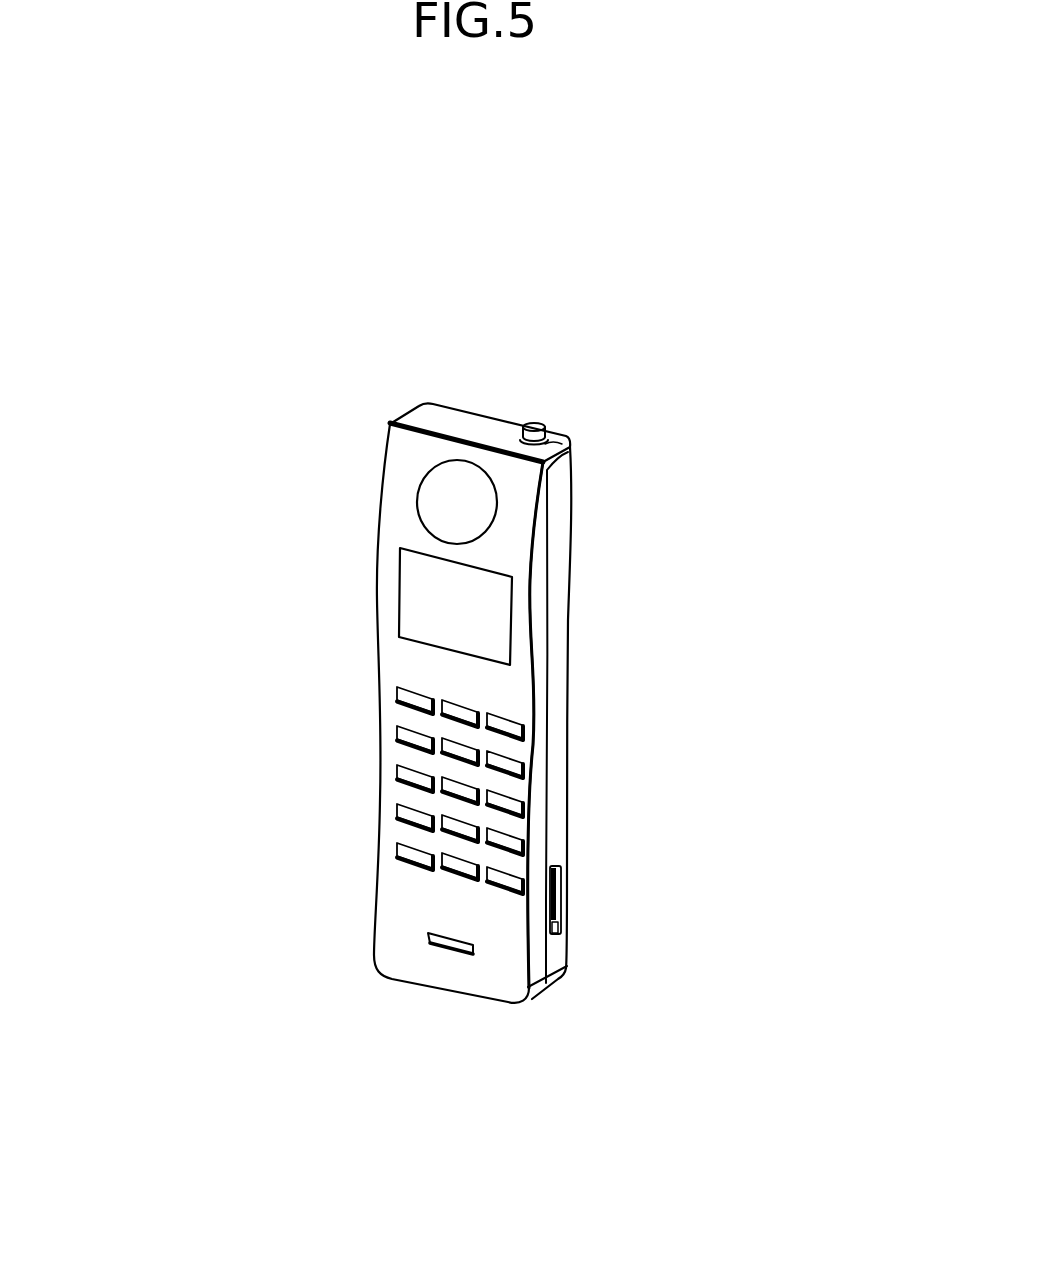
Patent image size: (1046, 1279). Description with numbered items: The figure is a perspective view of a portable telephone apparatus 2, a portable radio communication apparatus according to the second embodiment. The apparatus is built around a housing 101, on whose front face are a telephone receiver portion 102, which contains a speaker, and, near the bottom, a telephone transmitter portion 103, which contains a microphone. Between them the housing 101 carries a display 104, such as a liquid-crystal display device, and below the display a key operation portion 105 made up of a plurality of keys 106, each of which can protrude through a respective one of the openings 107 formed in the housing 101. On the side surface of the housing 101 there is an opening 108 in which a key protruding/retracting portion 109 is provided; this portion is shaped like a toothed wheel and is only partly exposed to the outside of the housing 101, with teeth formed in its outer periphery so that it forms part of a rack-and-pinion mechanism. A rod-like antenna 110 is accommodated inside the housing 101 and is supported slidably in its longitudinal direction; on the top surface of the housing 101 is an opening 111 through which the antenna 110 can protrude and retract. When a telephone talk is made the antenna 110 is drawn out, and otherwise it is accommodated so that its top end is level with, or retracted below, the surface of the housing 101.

The portable telephone apparatus 2 is at (446, 306).
The housing 101 is at (394, 419).
The telephone receiver portion 102 is at (438, 503).
The telephone transmitter portion 103 is at (450, 950).
The display 104 is at (485, 625).
The key operation portion 105 is at (336, 719).
The keys 106 is at (397, 856).
The openings 107 is at (514, 770).
The opening 108 is at (558, 928).
The key protruding/retracting portion 109 is at (558, 900).
The antenna 110 is at (546, 427).
The opening 111 is at (553, 439).